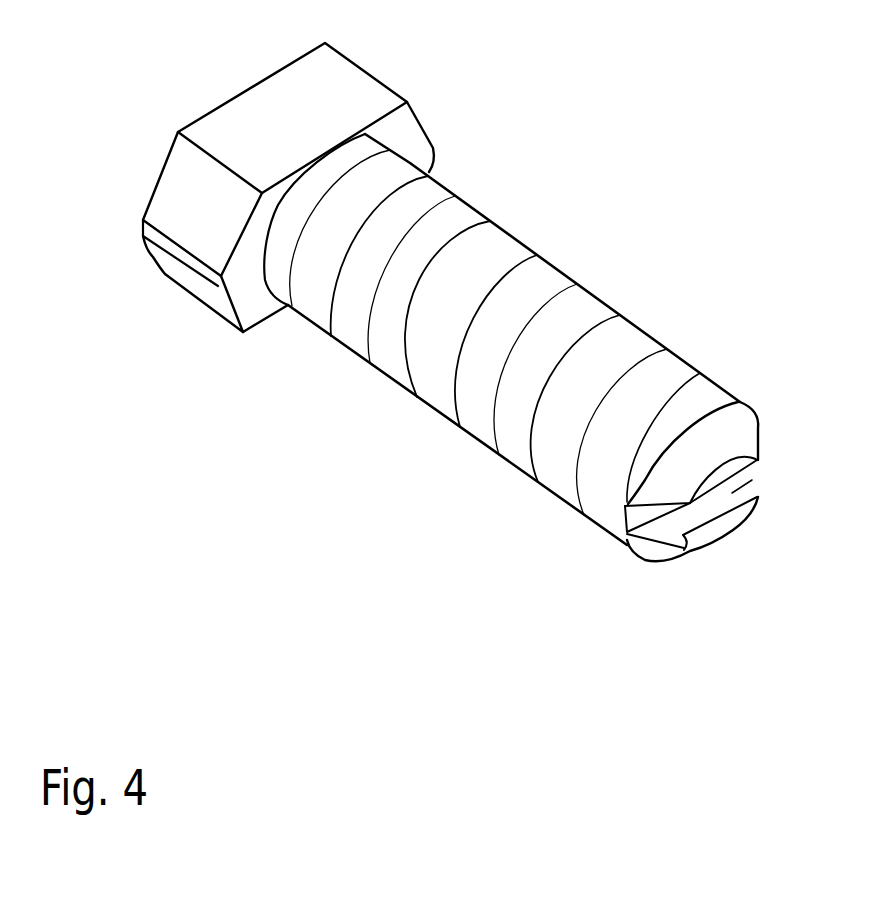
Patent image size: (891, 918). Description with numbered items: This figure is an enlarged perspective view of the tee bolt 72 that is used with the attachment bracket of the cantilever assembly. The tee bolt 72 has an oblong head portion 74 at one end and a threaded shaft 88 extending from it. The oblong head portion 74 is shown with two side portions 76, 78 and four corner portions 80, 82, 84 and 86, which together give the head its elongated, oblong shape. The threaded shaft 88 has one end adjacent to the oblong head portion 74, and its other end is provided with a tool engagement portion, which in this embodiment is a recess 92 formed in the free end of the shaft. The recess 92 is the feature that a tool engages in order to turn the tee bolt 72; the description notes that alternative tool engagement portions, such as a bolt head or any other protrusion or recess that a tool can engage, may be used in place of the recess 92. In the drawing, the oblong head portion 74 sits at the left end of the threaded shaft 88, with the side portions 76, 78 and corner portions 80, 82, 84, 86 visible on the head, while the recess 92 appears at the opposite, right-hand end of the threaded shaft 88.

The tee bolt 72 is at (635, 150).
The oblong head portion 74 is at (100, 128).
The side portion 76 is at (306, 128).
The side portion 78 is at (265, 318).
The corner portion 80 is at (218, 209).
The corner portion 82 is at (422, 117).
The corner portion 84 is at (432, 165).
The corner portion 86 is at (200, 293).
The threaded shaft 88 is at (597, 293).
The recess 92 is at (760, 466).